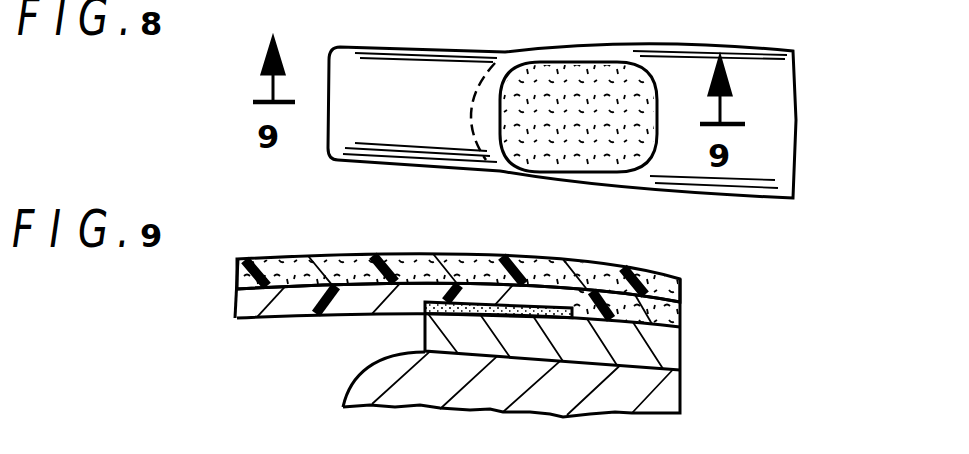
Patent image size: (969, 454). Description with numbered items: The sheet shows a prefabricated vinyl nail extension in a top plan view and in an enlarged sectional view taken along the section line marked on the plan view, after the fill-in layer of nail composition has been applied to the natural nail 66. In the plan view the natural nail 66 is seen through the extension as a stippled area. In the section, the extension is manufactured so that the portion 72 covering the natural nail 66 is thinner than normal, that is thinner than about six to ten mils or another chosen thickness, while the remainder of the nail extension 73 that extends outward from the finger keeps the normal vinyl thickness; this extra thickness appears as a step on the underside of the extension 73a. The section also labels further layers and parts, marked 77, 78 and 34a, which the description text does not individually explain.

In FIG. 8, the natural nail 66 is at (574, 136).
In FIG. 9, the portion of the nail extension covering the natural nail 72 is at (488, 300).
In FIG. 9, the remainder of the nail extension 73 is at (293, 303).
In FIG. 9, the underside of the extension 73a is at (403, 300).
In FIG. 9, the intermediate layer 77 is at (682, 318).
In FIG. 9, the abrasive top layer 78 is at (667, 283).
In FIG. 9, the substrate body 34a is at (665, 348).